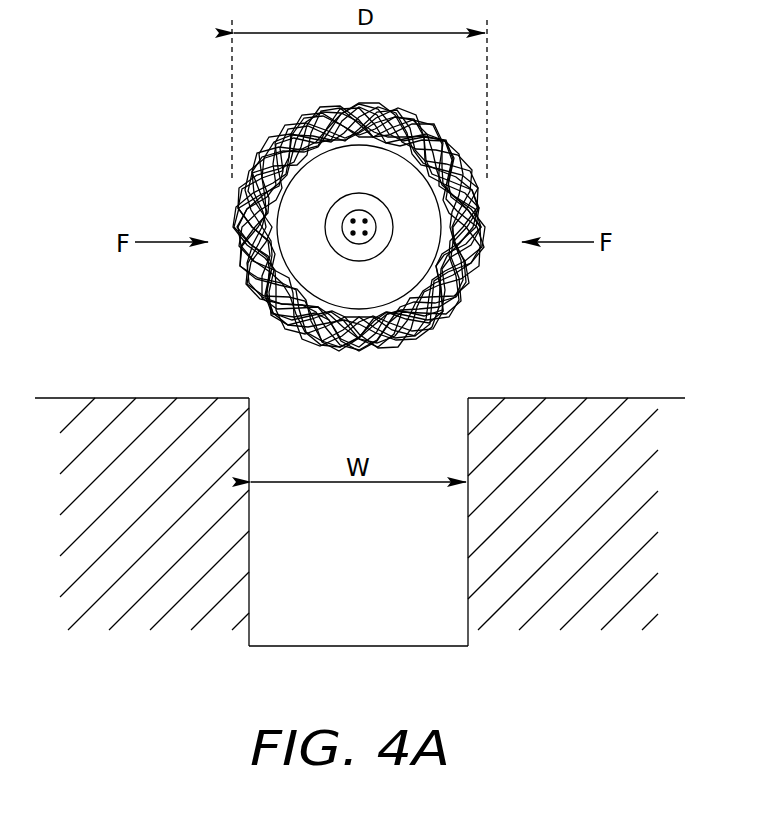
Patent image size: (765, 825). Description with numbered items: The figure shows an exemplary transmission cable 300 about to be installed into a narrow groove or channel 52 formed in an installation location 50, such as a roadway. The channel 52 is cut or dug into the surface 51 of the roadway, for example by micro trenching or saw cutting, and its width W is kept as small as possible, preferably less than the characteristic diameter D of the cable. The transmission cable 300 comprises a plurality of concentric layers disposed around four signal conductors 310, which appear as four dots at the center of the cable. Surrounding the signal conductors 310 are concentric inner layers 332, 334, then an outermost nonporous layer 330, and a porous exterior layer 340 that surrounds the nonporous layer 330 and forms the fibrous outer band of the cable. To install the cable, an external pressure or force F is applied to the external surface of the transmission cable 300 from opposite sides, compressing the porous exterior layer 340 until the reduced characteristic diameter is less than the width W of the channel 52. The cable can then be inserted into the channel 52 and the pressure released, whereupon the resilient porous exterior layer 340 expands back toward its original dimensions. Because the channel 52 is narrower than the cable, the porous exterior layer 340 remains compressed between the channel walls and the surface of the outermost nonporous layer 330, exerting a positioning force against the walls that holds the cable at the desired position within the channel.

The transmission cable 300 is at (167, 130).
The signal conductors 310 is at (371, 240).
The inner buffer layer 332 is at (341, 209).
The jacket layer 334 is at (388, 170).
The nonporous layer 330 is at (421, 253).
The porous exterior layer 340 is at (258, 283).
The installation location 50 is at (63, 368).
The surface 51 is at (615, 398).
The channel 52 is at (305, 623).